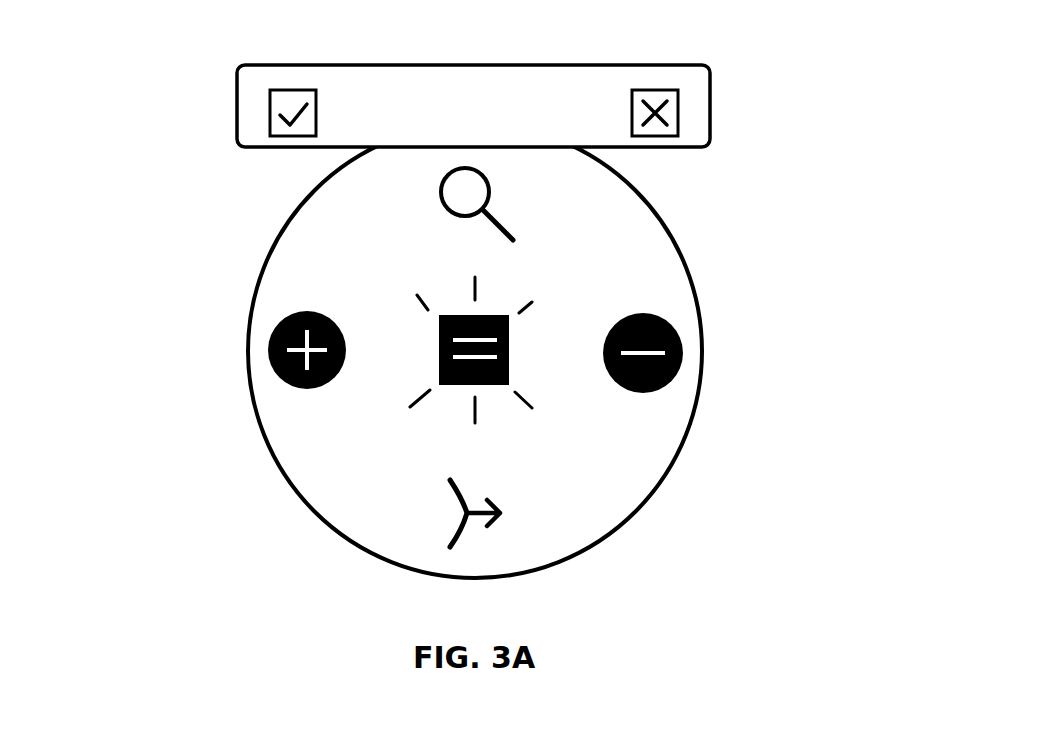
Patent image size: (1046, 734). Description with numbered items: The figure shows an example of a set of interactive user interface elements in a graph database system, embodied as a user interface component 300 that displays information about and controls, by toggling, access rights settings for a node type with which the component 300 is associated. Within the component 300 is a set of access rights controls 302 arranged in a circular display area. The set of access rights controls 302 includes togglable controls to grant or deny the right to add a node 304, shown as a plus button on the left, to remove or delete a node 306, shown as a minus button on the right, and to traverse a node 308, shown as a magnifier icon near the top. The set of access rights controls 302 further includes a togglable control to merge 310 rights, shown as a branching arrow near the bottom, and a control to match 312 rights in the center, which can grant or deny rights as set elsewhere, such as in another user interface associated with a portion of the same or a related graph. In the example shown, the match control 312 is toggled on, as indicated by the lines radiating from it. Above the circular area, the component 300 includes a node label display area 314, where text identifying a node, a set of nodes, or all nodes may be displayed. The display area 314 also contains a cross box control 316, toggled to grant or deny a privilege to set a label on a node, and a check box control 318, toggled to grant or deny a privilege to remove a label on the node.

The user interface component 300 is at (148, 72).
The set of access rights controls 302 is at (295, 495).
The add a node control 304 is at (310, 305).
The remove a node control 306 is at (642, 305).
The traverse a node control 308 is at (490, 185).
The merge control 310 is at (447, 498).
The match control 312 is at (488, 388).
The node label display area 314 is at (713, 110).
The cross box control 316 is at (655, 90).
The check box control 318 is at (290, 90).